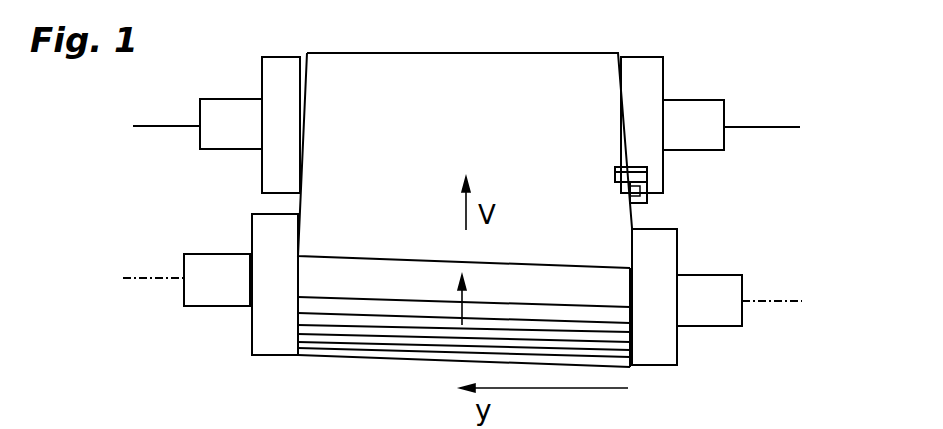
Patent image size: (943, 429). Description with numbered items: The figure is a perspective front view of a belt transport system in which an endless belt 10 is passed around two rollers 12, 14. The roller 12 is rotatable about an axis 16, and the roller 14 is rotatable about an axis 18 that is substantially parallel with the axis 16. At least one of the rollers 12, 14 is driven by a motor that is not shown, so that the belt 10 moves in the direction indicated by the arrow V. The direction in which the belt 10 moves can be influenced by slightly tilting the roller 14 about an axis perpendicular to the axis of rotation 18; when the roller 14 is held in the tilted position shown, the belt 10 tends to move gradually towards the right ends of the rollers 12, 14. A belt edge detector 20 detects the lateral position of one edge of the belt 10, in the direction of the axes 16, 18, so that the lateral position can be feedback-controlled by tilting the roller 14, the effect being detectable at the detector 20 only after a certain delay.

The endless belt 10 is at (300, 207).
The roller 12 is at (655, 76).
The roller 14 is at (663, 342).
The axis 16 is at (776, 127).
The axis of rotation 18 is at (772, 302).
The belt edge detector 20 is at (667, 182).